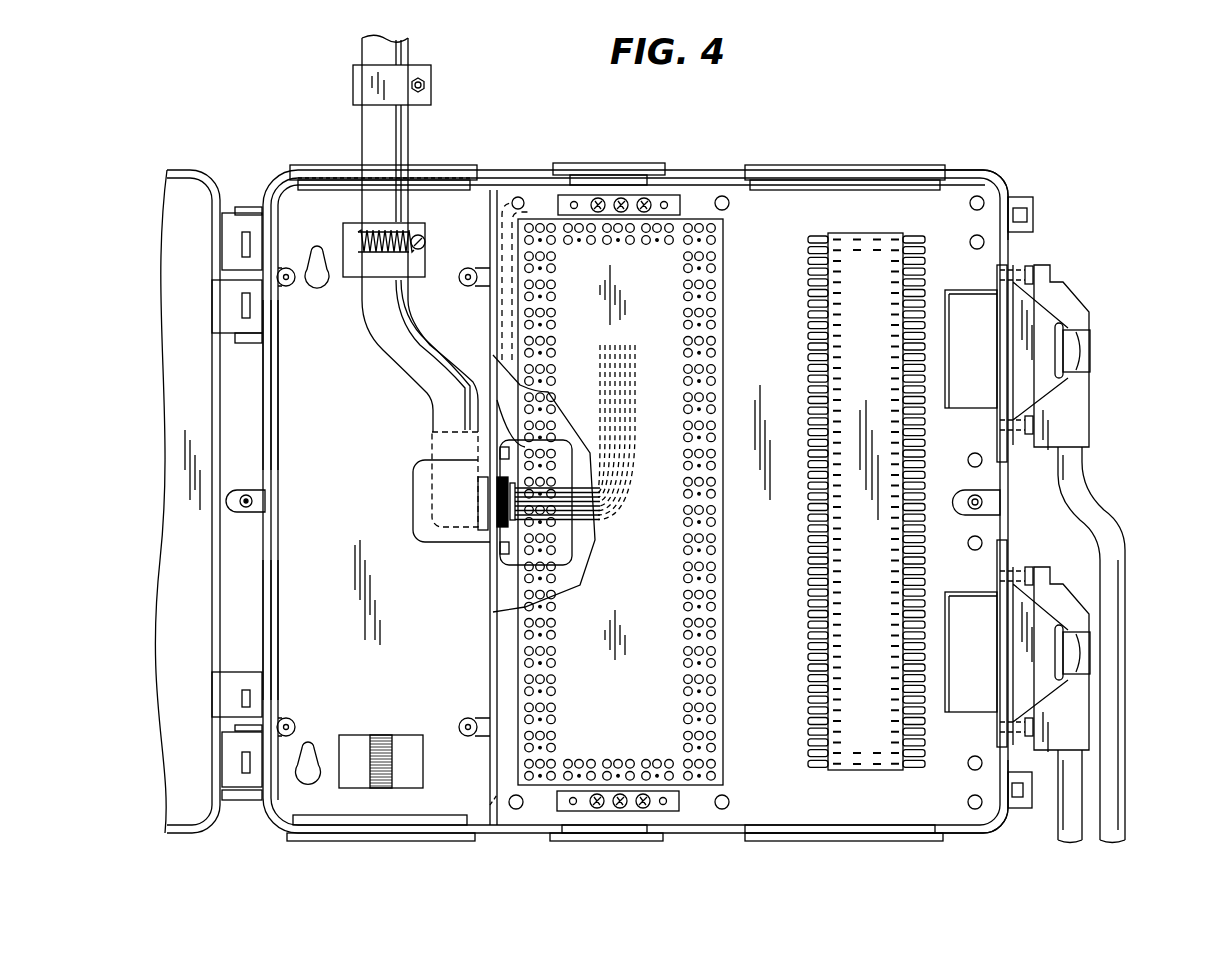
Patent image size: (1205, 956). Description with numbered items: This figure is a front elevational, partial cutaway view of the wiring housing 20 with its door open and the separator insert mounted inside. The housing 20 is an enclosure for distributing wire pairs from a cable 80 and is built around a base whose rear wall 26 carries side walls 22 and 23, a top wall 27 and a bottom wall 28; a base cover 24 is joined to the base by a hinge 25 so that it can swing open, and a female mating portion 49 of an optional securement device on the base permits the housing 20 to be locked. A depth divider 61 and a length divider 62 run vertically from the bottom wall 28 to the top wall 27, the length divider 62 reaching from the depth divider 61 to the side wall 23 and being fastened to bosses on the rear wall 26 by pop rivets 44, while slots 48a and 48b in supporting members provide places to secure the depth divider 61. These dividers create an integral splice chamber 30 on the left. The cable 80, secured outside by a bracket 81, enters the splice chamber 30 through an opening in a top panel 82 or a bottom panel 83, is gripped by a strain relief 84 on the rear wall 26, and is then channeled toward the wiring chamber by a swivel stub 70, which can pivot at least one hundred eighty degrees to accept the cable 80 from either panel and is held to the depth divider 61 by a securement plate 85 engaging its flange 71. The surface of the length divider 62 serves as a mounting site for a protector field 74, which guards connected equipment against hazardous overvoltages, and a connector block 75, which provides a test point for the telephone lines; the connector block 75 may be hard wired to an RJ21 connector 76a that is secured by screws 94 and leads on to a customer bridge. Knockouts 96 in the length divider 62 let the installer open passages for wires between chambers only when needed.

The wiring housing 20 is at (606, 150).
The side wall 22 is at (262, 383).
The side wall 23 is at (1010, 190).
The base cover 24 is at (182, 170).
The hinge 25 is at (243, 212).
The rear wall 26 is at (356, 477).
The top wall 27 is at (962, 170).
The bottom wall 28 is at (990, 838).
The splice chamber 30 is at (286, 636).
The pop rivets 44 is at (720, 810).
The slot 48a is at (496, 193).
The slot 48b is at (490, 805).
The female mating portion 49 is at (1000, 500).
The depth divider 61 is at (494, 800).
The length divider 62 is at (790, 190).
The swivel stub 70 is at (432, 492).
The flange 71 is at (522, 474).
The protector field 74 is at (668, 633).
The connector block 75 is at (835, 572).
The RJ21 connector 76a is at (1068, 300).
The cable 80 is at (362, 53).
The bracket 81 is at (415, 66).
The top panel 82 is at (333, 166).
The bottom panel 83 is at (333, 834).
The strain relief 84 is at (421, 256).
The securement plate 85 is at (500, 560).
The screws 94 is at (1035, 274).
The knockouts 96 is at (962, 300).